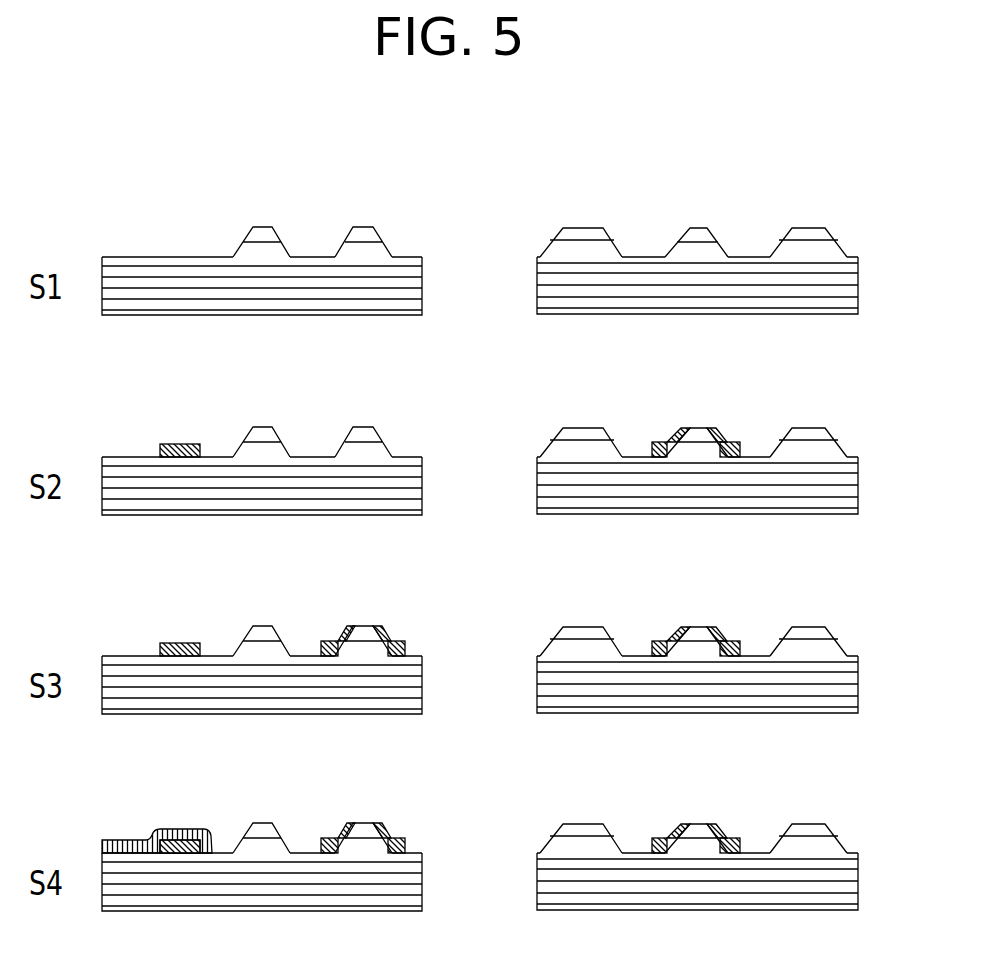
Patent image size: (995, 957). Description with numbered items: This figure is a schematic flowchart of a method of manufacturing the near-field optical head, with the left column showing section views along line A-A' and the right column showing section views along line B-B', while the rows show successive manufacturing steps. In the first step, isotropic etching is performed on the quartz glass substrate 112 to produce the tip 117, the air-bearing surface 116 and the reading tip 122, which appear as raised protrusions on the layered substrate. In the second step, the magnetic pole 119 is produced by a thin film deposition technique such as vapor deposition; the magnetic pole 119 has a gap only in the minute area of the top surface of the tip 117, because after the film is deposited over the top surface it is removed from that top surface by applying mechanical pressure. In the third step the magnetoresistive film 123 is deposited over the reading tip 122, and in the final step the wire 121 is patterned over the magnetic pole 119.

The quartz glass substrate 112 is at (188, 288).
The air-bearing surface 116 is at (582, 237).
The tip 117 is at (250, 245).
The magnetic pole 119 is at (190, 445).
The wire 121 is at (200, 832).
The reading tip 122 is at (380, 238).
The magnetoresistive film 123 is at (407, 642).